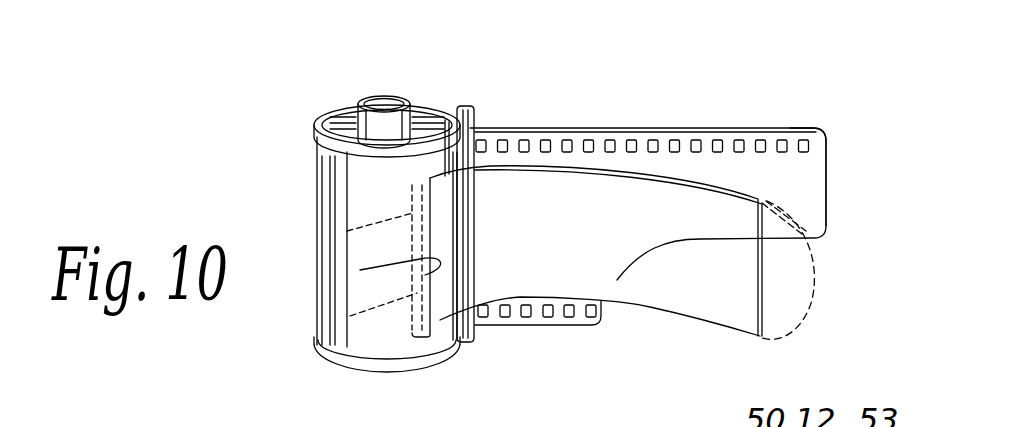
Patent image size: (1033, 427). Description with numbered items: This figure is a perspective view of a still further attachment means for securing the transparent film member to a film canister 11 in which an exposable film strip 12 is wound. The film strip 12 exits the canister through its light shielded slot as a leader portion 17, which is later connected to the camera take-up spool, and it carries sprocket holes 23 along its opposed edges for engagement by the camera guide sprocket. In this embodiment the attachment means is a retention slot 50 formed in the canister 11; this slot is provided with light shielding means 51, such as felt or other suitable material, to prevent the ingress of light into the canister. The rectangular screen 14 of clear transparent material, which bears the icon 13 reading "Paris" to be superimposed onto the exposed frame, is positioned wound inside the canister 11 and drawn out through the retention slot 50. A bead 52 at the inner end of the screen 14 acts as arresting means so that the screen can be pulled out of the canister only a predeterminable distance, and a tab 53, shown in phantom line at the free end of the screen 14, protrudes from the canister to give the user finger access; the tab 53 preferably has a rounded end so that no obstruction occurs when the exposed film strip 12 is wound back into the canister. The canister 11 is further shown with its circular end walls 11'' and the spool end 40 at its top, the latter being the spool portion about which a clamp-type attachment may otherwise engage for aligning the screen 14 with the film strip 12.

The film canister 11 is at (354, 226).
The circular end walls 11'' is at (380, 235).
The spool end 40 is at (412, 122).
The bead 52 is at (345, 232).
The retention slot 50 is at (360, 270).
The light shielding means 51 is at (350, 316).
The exposable film strip 12 is at (752, 165).
The sprocket holes 23 is at (720, 139).
The leader portion 17 is at (787, 177).
The rectangular screen 14 is at (717, 295).
The icon 13 is at (600, 285).
The tab 53 is at (813, 276).